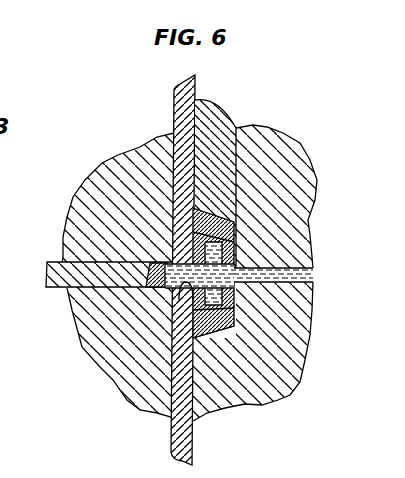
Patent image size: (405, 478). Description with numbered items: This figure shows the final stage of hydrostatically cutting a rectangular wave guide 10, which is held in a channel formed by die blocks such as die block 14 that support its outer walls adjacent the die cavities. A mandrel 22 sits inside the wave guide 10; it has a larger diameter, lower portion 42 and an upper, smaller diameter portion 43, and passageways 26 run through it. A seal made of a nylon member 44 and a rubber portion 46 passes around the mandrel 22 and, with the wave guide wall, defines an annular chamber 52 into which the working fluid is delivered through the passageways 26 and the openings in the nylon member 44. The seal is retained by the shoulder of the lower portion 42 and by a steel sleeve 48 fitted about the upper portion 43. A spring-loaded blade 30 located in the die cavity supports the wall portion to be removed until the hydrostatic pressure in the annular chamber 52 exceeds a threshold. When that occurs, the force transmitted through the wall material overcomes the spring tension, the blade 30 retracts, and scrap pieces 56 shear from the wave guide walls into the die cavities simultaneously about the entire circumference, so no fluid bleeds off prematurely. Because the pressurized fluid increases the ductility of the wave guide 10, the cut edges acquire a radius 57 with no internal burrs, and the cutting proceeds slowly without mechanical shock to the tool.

The rectangular wave guide 10 is at (174, 101).
The die block 14 is at (110, 380).
The mandrel 22 is at (293, 413).
The passageways 26 is at (315, 275).
The blade 30 is at (56, 289).
The lower portion of mandrel 42 is at (302, 370).
The upper portion of mandrel 43 is at (308, 150).
The nylon member 44 is at (234, 313).
The rubber portion 46 is at (218, 340).
The steel sleeve 48 is at (220, 104).
The annular chamber 52 is at (207, 264).
The scrap pieces 56 is at (155, 264).
The radius 57 is at (181, 298).